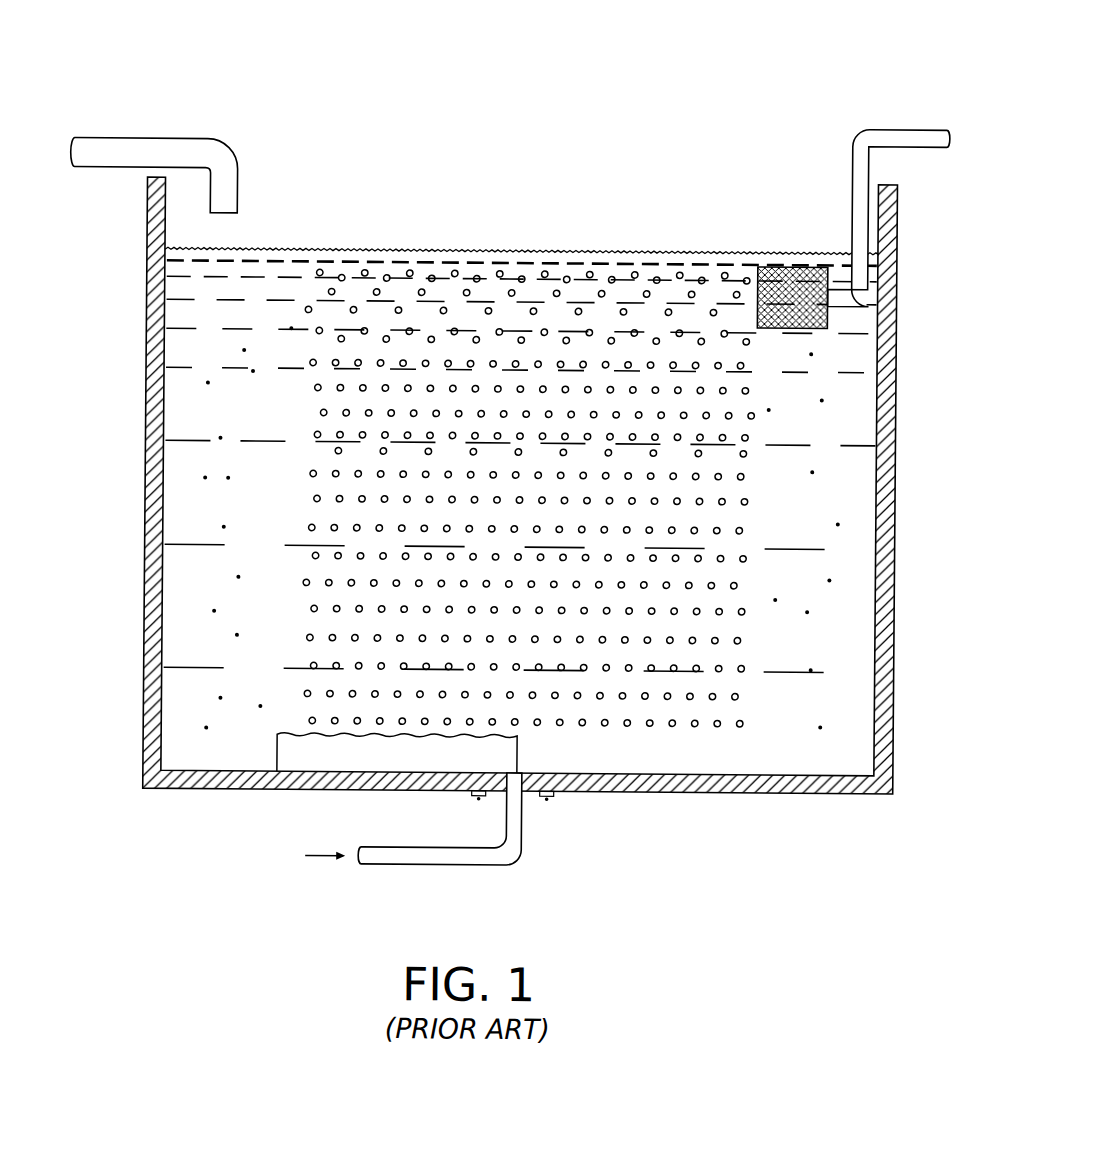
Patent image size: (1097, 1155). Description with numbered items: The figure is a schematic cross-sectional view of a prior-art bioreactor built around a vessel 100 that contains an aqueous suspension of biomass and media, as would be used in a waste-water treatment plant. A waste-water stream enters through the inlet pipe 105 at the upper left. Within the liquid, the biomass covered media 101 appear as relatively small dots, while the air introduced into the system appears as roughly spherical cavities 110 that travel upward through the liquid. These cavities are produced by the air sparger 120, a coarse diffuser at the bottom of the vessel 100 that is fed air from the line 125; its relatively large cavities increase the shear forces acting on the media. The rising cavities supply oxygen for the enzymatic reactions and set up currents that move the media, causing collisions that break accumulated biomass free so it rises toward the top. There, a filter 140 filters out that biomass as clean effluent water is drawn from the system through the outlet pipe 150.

The vessel 100 is at (887, 735).
The biomass covered media 101 is at (224, 529).
The inlet pipe 105 is at (172, 151).
The cavities 110 is at (315, 435).
The air sparger 120 is at (636, 757).
The line 125 is at (518, 822).
The filter 140 is at (796, 268).
The outlet pipe 150 is at (887, 141).